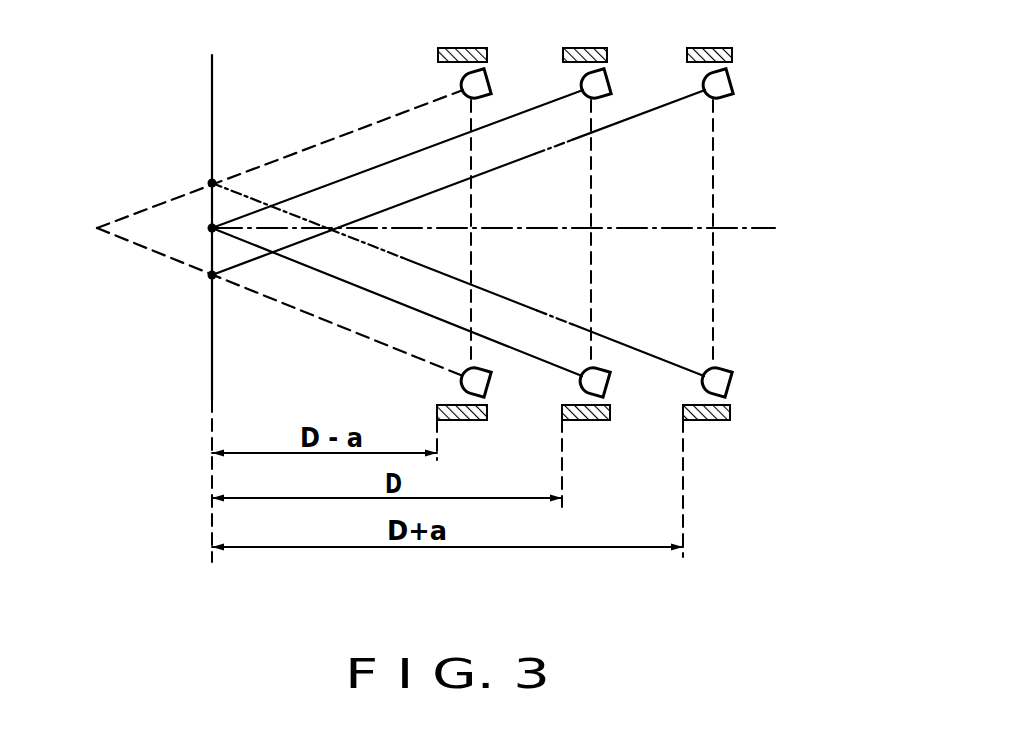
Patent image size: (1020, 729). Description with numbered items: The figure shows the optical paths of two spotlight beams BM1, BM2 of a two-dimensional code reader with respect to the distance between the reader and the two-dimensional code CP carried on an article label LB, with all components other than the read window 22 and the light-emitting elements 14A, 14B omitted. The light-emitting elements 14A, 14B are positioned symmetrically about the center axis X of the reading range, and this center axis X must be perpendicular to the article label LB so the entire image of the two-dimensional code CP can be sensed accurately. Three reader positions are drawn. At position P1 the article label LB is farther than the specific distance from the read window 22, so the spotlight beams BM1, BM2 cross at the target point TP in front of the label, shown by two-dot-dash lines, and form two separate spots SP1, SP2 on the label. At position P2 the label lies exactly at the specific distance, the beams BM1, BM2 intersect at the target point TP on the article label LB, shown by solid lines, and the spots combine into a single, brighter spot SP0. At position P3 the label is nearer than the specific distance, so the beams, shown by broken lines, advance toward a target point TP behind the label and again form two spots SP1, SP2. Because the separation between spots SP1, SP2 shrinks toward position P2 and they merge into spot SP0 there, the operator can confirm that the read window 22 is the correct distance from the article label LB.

The light-emitting element 14A is at (512, 65).
The light-emitting element 14B is at (488, 386).
The read window 22 is at (440, 383).
The spotlight beam BM1 is at (544, 175).
The spotlight beam BM2 is at (434, 312).
The spot SP0 is at (212, 228).
The spot SP1 is at (210, 277).
The spot SP2 is at (208, 182).
The target point TP is at (95, 228).
The article label LB is at (212, 390).
The two-dimensional code CP is at (253, 409).
The center axis X is at (722, 228).
The position P1 is at (700, 186).
The position P2 is at (578, 186).
The position P3 is at (454, 186).